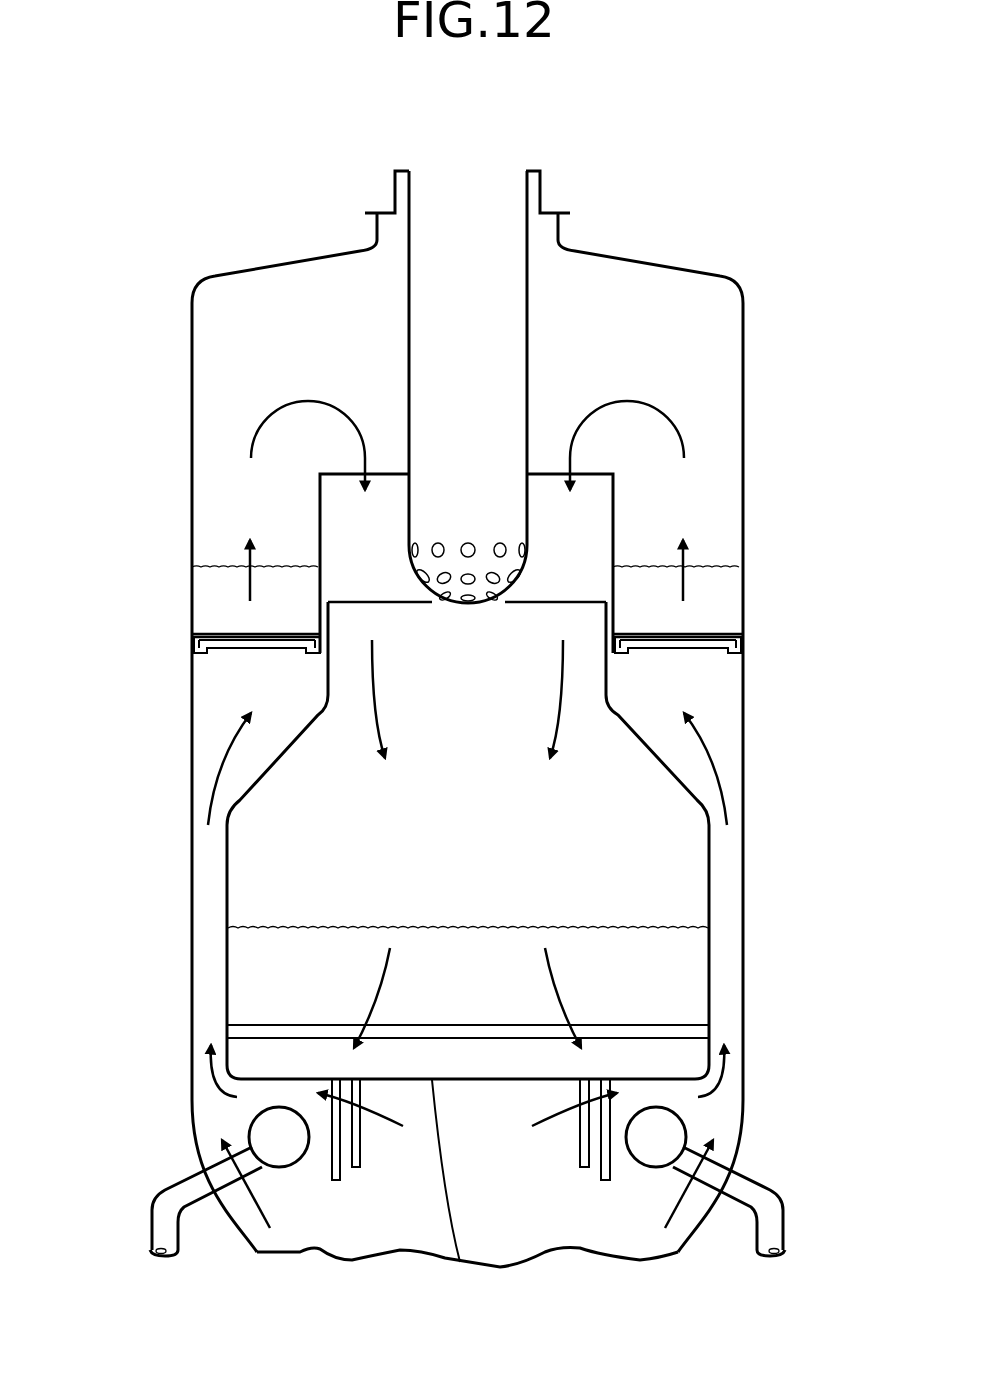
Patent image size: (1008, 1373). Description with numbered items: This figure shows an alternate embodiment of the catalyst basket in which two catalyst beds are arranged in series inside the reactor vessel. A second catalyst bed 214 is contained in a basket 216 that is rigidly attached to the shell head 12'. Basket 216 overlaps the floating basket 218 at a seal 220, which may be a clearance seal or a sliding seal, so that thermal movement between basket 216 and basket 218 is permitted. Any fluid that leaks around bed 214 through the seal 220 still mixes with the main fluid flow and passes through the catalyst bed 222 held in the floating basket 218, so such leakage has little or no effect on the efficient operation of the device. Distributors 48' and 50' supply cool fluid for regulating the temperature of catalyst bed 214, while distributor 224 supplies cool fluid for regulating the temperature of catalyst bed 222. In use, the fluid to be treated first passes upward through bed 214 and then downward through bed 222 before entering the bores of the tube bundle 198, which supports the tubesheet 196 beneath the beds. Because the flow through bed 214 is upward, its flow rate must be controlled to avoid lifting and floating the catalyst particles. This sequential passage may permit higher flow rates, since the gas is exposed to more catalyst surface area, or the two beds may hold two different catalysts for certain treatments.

The shell head 12' is at (430, 719).
The tubesheet 196 is at (460, 1262).
The tube bundle 198 is at (328, 1182).
The second catalyst bed 214 is at (218, 606).
The basket 216 is at (320, 510).
The floating basket 218 is at (712, 889).
The seal 220 is at (612, 622).
The catalyst bed 222 is at (686, 970).
The distributor 224 is at (528, 388).
The distributor 48' is at (224, 1173).
The distributor 50' is at (718, 1173).